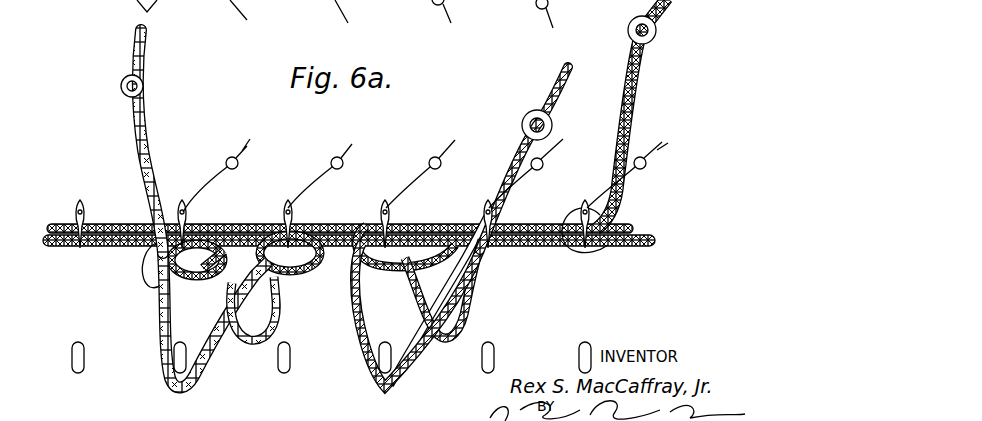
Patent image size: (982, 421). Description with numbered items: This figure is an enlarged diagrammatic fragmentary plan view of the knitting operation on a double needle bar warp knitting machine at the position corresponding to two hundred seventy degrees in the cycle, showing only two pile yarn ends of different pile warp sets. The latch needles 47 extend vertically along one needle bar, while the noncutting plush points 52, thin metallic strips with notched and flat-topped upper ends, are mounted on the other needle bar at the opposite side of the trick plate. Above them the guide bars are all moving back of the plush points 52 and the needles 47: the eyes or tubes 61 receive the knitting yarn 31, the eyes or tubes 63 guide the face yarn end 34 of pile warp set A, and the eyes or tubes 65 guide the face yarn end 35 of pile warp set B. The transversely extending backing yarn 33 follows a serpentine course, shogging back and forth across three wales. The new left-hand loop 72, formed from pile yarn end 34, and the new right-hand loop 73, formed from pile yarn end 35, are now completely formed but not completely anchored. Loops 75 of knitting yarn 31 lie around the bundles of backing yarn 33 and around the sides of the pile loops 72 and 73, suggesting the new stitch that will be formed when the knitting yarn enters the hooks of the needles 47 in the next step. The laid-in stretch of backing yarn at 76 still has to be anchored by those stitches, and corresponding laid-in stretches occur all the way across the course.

The knitting yarn 31 is at (675, 140).
The backing yarn 33 is at (658, 4).
The face yarn end 34 is at (558, 108).
The face yarn end 35 is at (128, 56).
The latch needle 47 is at (290, 212).
The plush point 52 is at (71, 354).
The eyes or tubes 61 is at (240, 167).
The eyes or tubes 63 is at (523, 121).
The eyes or tubes 65 is at (147, 97).
The left-hand loop 72 is at (384, 388).
The right-hand loop 73 is at (177, 384).
The loops of knitting yarn 75 is at (160, 287).
The laid-in stretch of backing yarn 76 is at (521, 256).